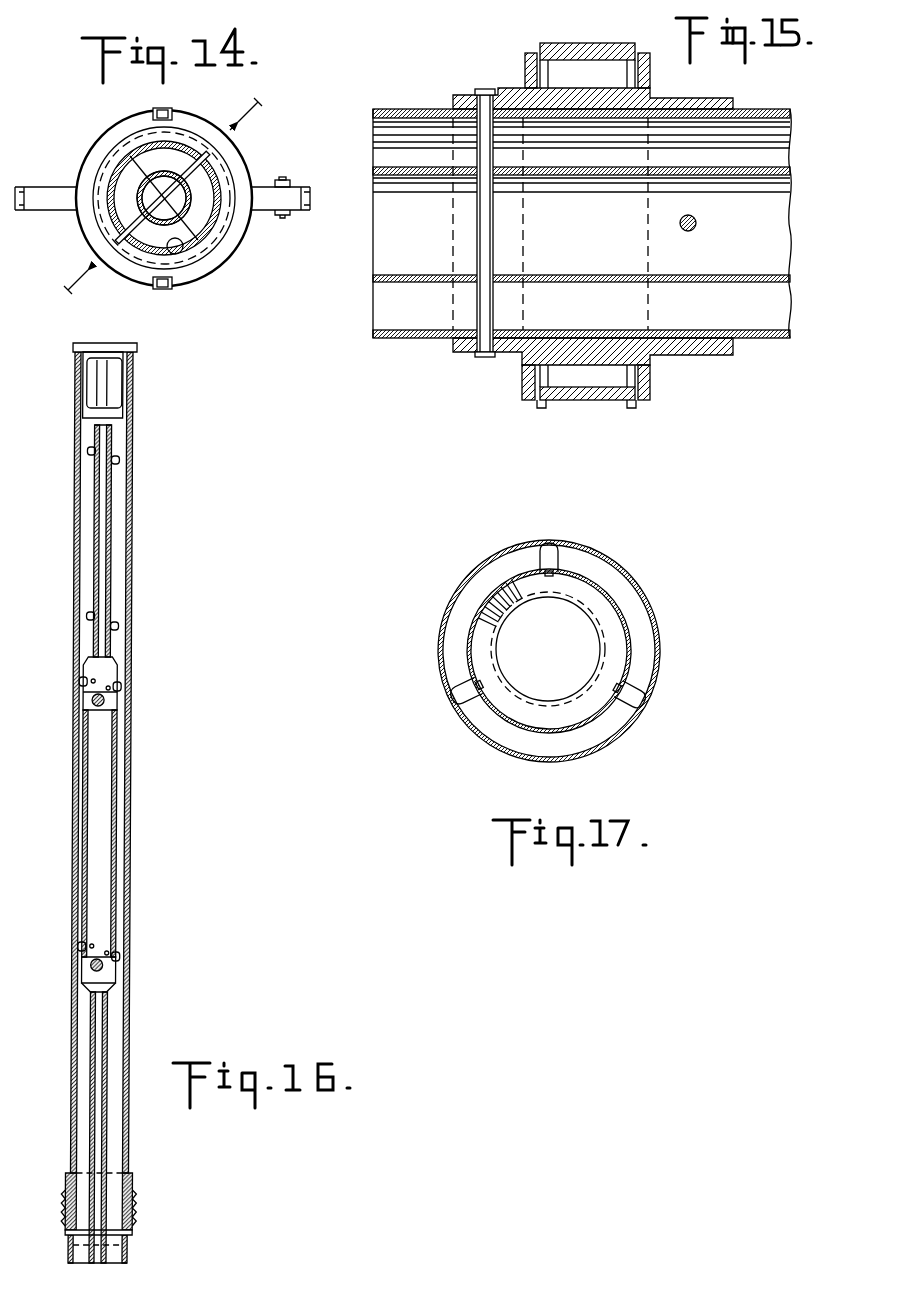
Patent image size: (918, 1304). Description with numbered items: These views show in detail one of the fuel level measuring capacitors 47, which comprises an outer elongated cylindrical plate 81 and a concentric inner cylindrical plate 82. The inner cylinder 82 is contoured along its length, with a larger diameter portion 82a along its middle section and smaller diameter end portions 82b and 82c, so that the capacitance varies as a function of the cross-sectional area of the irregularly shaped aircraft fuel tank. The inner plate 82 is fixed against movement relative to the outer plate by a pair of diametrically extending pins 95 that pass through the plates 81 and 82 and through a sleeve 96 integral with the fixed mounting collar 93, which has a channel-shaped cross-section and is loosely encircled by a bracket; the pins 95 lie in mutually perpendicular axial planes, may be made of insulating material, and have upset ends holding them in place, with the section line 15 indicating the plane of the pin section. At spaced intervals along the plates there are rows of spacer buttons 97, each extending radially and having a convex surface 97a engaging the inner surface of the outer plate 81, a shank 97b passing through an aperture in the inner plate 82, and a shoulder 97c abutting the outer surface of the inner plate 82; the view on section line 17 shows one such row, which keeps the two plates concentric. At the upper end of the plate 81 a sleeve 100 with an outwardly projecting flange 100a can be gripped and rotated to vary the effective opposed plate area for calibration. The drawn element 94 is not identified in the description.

In FIG. 14, the section line 15— 15 is at (178, 204).
In FIG. 16, the section line 17— 17 is at (65, 970).
In FIG. 16, the fuel level measuring capacitor 47 is at (222, 703).
In FIG. 14, the outer cylindrical plate 81 is at (185, 252).
In FIG. 15, the outer cylindrical plate 81 is at (768, 340).
In FIG. 17, the outer cylindrical plate 81 is at (607, 728).
In FIG. 16, the outer cylindrical plate 81 is at (77, 804).
In FIG. 14, the inner cylindrical plate 82 is at (192, 210).
In FIG. 15, the inner cylindrical plate 82 is at (770, 177).
In FIG. 17, the inner cylindrical plate 82 is at (493, 712).
In FIG. 16, the inner cylindrical plate 82 is at (230, 757).
In FIG. 16, the larger diameter portion 82a is at (119, 793).
In FIG. 16, the smaller diameter end portion 82b is at (111, 1010).
In FIG. 16, the smaller diameter end portion 82c is at (112, 650).
In FIG. 15, the fixed mounting collar 93 is at (651, 390).
In FIG. 15, the cap plate 94 is at (560, 388).
In FIG. 14, the pin 95 is at (195, 178).
In FIG. 15, the pin 95 is at (477, 243).
In FIG. 16, the pin 95 is at (106, 1180).
In FIG. 15, the sleeve 96 is at (712, 357).
In FIG. 16, the sleeve 96 is at (133, 1188).
In FIG. 17, the spacer button 97 is at (460, 697).
In FIG. 16, the spacer button 97 is at (115, 622).
In FIG. 17, the convex surface 97a is at (540, 545).
In FIG. 17, the shank 97b is at (547, 578).
In FIG. 17, the shoulder 97c is at (565, 583).
In FIG. 16, the sleeve 100 is at (123, 421).
In FIG. 16, the flange 100a is at (135, 347).